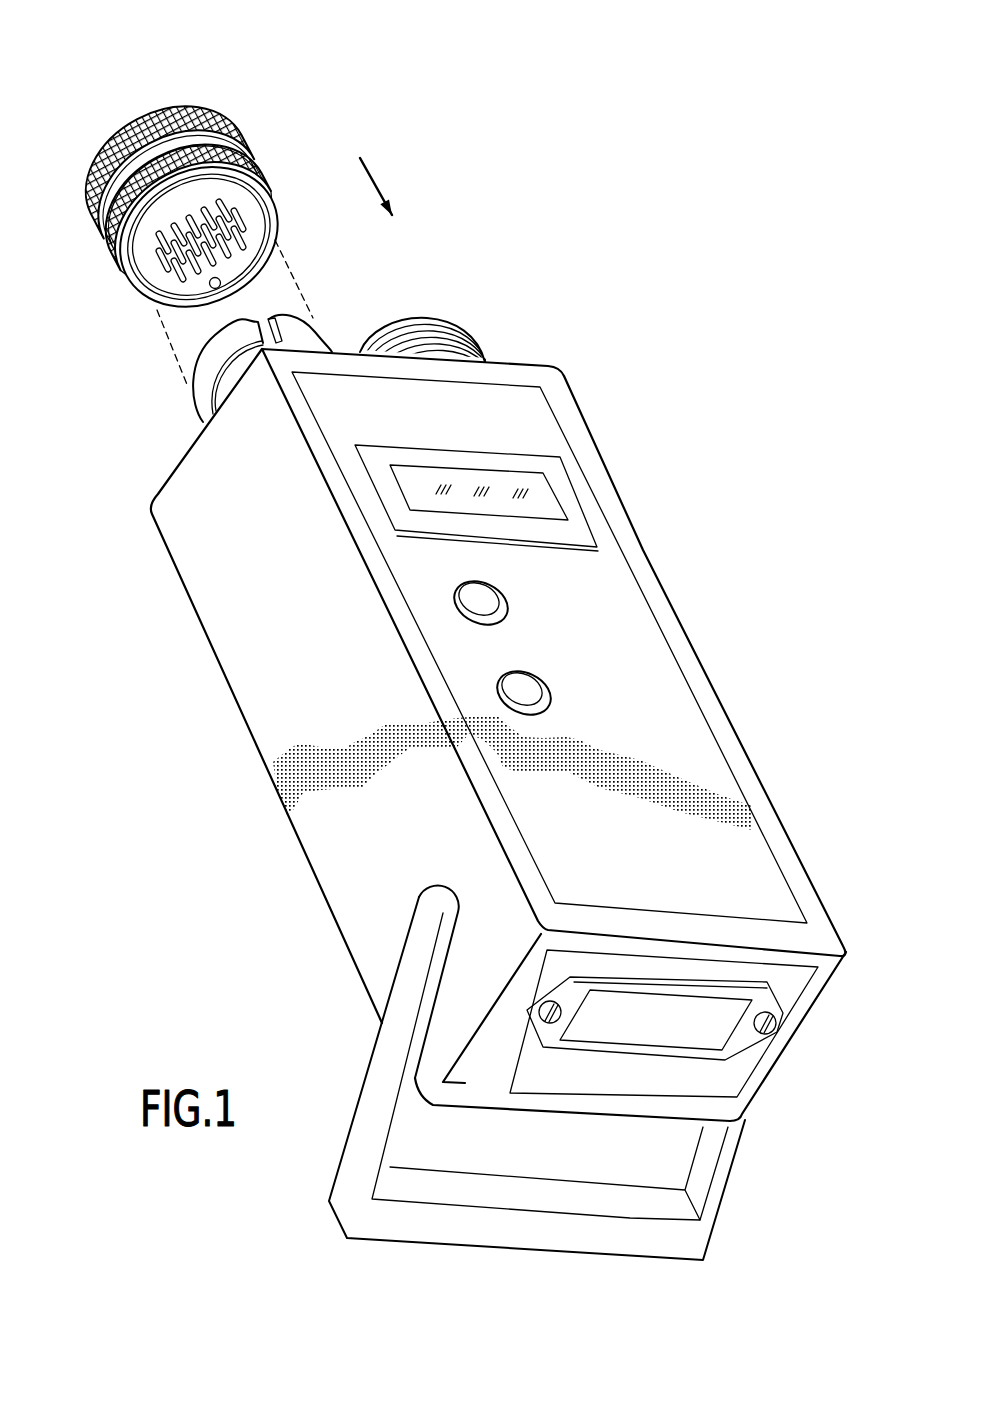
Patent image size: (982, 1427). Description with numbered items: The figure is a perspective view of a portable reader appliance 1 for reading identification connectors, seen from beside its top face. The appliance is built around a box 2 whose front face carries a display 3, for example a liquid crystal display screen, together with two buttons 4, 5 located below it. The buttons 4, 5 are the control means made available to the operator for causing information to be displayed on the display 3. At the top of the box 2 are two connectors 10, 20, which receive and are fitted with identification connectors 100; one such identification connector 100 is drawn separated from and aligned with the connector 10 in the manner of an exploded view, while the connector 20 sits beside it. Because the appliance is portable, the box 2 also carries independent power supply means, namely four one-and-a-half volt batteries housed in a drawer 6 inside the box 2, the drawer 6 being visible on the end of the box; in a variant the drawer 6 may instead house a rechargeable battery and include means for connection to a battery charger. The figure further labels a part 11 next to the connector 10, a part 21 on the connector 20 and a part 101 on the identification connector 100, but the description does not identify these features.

The reader appliance 1 is at (491, 763).
The box 2 is at (248, 693).
The display 3 is at (505, 483).
The button 4 is at (477, 587).
The button 5 is at (522, 677).
The drawer 6 is at (656, 1031).
The connector 10 is at (305, 333).
The socket collar 11 is at (222, 392).
The connector 20 is at (453, 331).
The threads 21 is at (430, 318).
The identification connector 100 is at (194, 181).
The contact pins 101 is at (157, 307).